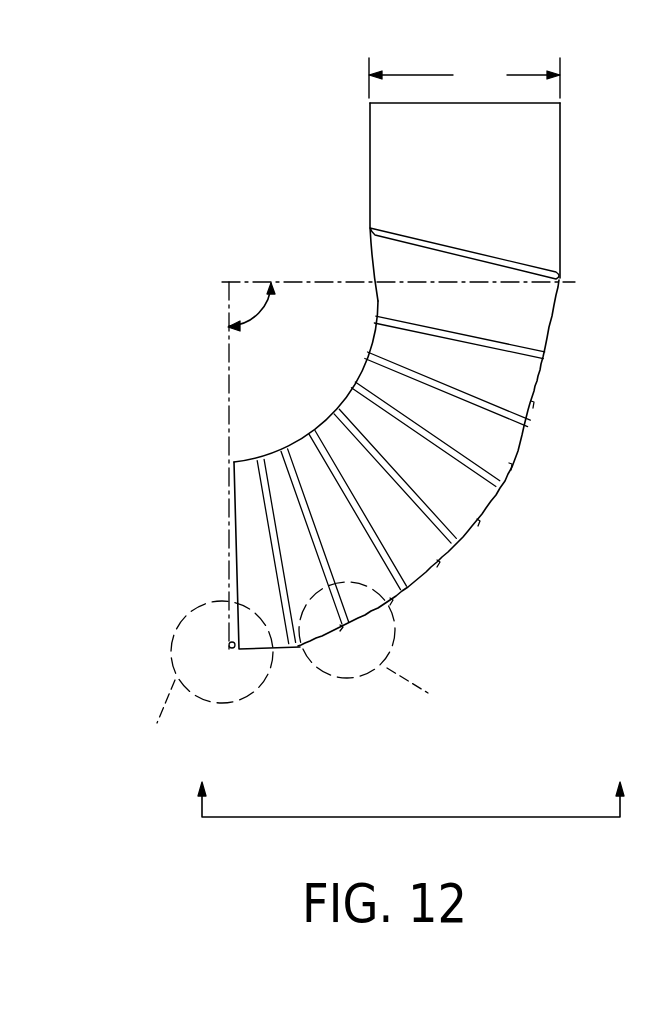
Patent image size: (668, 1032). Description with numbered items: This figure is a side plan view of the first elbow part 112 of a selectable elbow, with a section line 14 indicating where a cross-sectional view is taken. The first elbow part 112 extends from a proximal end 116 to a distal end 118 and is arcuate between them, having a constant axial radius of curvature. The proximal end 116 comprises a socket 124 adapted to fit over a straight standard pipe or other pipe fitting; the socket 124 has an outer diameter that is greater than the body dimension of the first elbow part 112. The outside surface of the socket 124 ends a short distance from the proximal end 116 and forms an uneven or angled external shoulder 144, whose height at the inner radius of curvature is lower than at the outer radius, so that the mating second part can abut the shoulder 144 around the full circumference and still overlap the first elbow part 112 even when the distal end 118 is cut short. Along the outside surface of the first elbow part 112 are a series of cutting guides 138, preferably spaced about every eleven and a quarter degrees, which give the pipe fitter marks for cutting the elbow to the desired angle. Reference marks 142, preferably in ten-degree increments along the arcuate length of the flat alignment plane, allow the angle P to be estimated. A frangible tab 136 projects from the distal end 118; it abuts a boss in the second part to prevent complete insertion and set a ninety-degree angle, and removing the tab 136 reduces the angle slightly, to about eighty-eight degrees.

The first elbow part 112 is at (374, 423).
The proximal end 116 is at (384, 127).
The socket 124 is at (550, 128).
The angled external shoulder 144 is at (502, 260).
The distal end 118 is at (250, 548).
The frangible tab 136 is at (232, 642).
The cutting guides 138 is at (406, 588).
The reference marks 142 is at (477, 524).
The section line 14- 14 is at (411, 797).